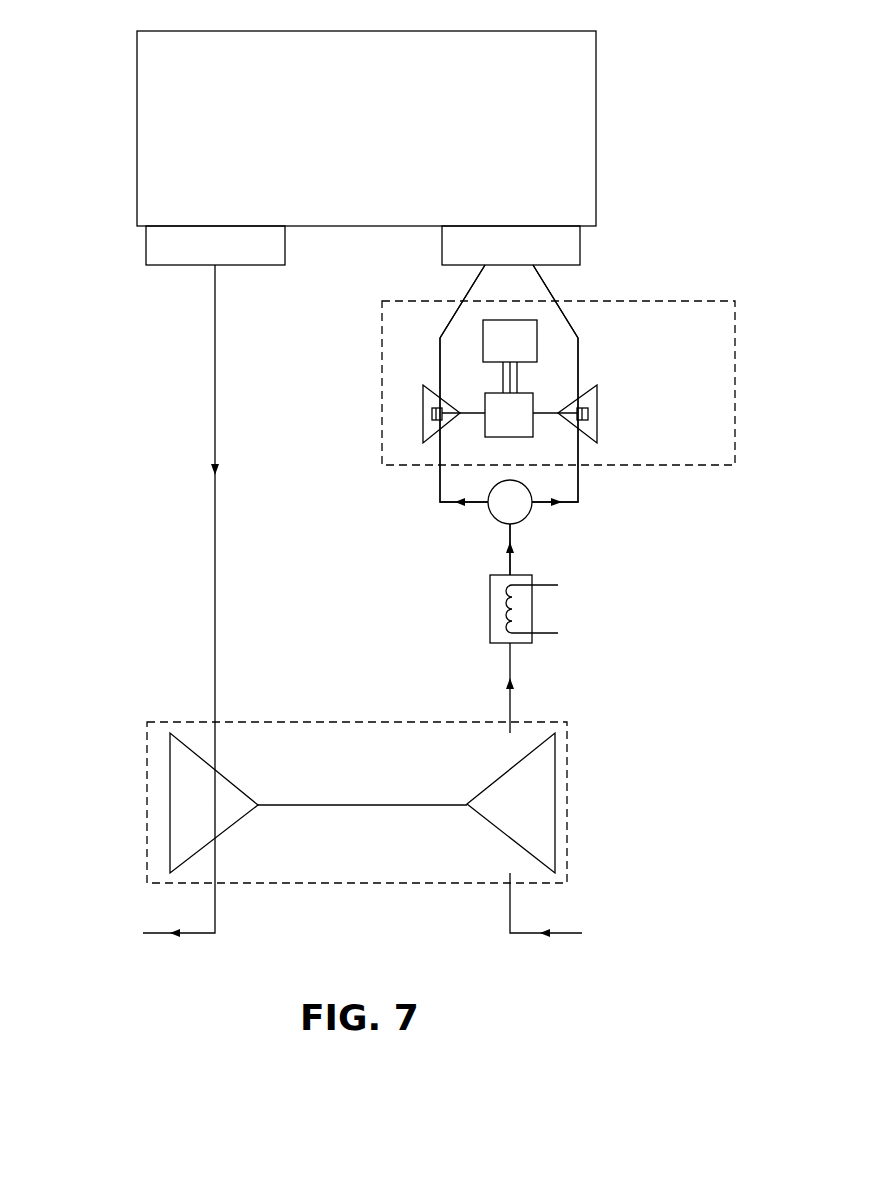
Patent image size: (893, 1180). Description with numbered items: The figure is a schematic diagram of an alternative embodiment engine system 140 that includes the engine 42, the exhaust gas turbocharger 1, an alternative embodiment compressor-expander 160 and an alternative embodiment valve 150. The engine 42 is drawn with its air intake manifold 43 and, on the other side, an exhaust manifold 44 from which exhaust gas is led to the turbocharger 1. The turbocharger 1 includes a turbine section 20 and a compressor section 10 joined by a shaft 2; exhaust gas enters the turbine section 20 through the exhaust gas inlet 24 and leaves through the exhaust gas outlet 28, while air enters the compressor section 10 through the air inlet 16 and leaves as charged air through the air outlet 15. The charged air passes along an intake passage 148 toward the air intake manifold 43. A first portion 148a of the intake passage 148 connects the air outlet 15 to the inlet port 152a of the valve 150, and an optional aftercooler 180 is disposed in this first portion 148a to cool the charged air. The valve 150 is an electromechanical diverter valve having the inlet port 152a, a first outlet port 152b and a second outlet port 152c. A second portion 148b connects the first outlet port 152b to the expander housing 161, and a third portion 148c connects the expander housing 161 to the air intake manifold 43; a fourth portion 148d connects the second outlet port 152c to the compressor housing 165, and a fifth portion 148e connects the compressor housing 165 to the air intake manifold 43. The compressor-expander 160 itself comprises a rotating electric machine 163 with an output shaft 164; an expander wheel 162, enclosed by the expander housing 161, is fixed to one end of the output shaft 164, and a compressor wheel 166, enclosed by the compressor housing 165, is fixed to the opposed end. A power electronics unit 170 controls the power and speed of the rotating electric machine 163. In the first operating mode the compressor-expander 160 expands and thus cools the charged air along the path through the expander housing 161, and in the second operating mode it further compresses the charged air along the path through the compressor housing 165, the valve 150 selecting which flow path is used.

The engine system 140 is at (95, 92).
The engine 42 is at (575, 56).
The air intake manifold 43 is at (566, 250).
The exhaust manifold 44 is at (160, 246).
The exhaust gas turbocharger 1 is at (147, 728).
The shaft 2 is at (356, 803).
The compressor section 10 is at (482, 805).
The air outlet 15 is at (511, 767).
The air inlet 16 is at (512, 841).
The turbine section 20 is at (222, 790).
The exhaust gas inlet 24 is at (213, 766).
The exhaust gas outlet 28 is at (218, 840).
The intake passage 148 is at (458, 290).
The first portion of the intake passage 148a is at (513, 535).
The second portion of the intake passage 148b is at (447, 503).
The third portion of the intake passage 148c is at (447, 333).
The fourth portion of the intake passage 148d is at (580, 472).
The fifth portion of the intake passage 148e is at (569, 320).
The valve 150 is at (523, 510).
The inlet port 152a is at (513, 524).
The first outlet port 152b is at (488, 510).
The second outlet port 152c is at (533, 494).
The compressor-expander 160 is at (735, 390).
The expander housing 161 is at (424, 411).
The expander wheel 162 is at (441, 408).
The rotating electric machine 163 is at (522, 393).
The output shaft 164 is at (466, 416).
The compressor housing 165 is at (595, 401).
The compressor wheel 166 is at (590, 414).
The power electronics unit 170 is at (509, 320).
The aftercooler 180 is at (490, 606).